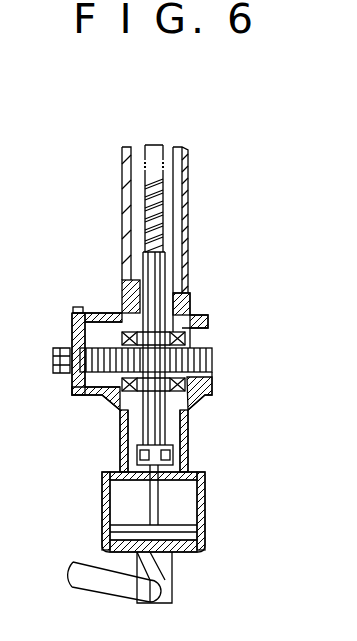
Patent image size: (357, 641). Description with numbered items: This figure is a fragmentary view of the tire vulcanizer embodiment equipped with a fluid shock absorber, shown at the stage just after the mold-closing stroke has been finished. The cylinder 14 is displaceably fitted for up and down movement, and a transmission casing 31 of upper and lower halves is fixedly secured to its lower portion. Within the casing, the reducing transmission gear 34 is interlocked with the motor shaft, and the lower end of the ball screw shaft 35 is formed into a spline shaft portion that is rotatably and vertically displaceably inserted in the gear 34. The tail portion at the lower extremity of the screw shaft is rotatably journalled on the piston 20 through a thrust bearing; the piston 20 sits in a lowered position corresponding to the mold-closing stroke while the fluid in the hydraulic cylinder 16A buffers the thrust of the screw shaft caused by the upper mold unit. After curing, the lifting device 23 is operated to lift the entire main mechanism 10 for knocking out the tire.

The main mechanism 10 is at (122, 242).
The cylinder 14 is at (122, 212).
The ball screw shaft 35 is at (168, 198).
The transmission casing 31 is at (70, 336).
The reducing transmission gear 34 is at (100, 370).
The housing 16A is at (205, 498).
The piston 20 is at (190, 530).
The lifting device 23 is at (97, 567).